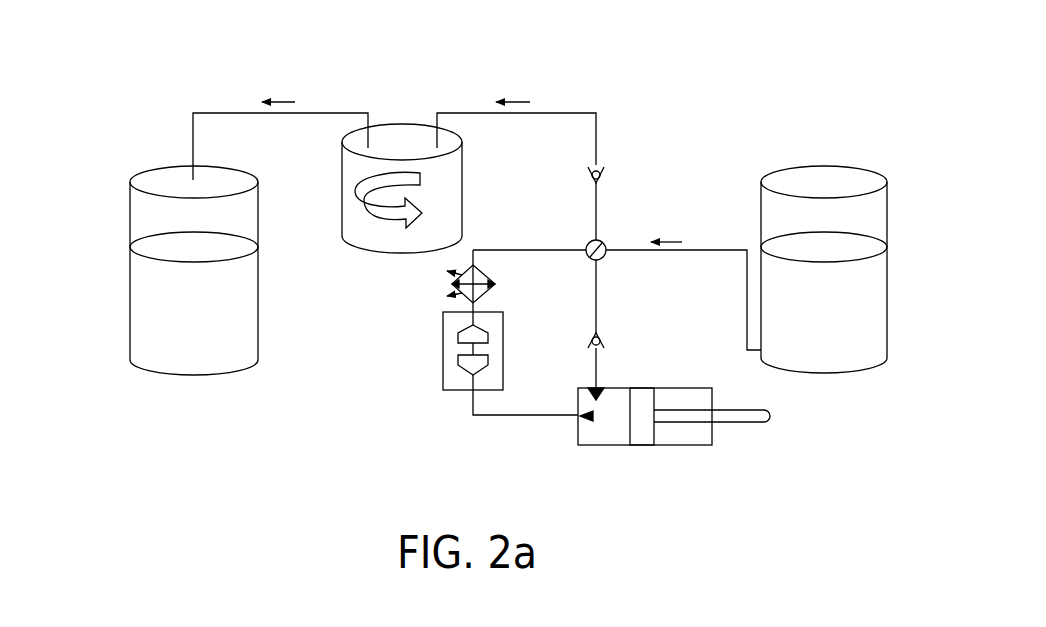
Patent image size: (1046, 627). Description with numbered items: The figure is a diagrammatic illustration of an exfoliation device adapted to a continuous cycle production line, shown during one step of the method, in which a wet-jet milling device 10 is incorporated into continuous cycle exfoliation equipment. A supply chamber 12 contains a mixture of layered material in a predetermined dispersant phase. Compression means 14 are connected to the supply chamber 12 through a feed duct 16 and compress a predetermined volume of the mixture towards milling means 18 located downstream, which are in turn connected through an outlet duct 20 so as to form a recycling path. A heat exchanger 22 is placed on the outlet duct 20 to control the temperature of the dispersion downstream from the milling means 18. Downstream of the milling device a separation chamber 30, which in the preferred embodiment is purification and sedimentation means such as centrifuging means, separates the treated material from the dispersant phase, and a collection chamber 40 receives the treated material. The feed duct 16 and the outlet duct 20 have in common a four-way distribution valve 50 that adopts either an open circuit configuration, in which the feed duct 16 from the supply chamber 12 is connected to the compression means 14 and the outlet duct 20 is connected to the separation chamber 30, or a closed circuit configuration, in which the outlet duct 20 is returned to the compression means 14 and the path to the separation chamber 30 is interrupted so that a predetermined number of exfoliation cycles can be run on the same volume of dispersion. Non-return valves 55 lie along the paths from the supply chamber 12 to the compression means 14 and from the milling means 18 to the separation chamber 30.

The wet-jet milling device 10 is at (393, 405).
The supply chamber 12 is at (818, 187).
The compression means 14 is at (727, 435).
The feed duct 16 is at (600, 287).
The milling means 18 is at (441, 345).
The outlet duct 20 is at (530, 248).
The heat exchanger 22 is at (440, 290).
The separation chamber 30 is at (367, 252).
The collection chamber 40 is at (118, 292).
The 4-way distribution valve 50 is at (606, 240).
The non-return valves 55 is at (613, 163).